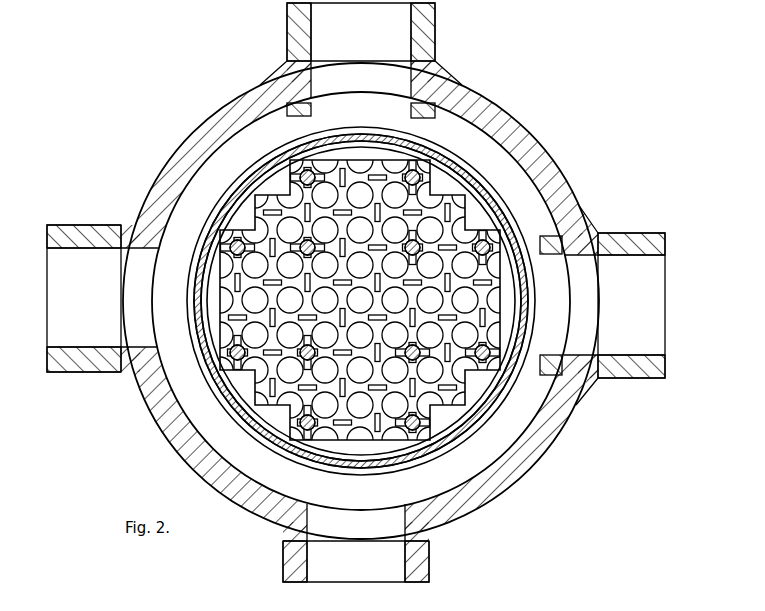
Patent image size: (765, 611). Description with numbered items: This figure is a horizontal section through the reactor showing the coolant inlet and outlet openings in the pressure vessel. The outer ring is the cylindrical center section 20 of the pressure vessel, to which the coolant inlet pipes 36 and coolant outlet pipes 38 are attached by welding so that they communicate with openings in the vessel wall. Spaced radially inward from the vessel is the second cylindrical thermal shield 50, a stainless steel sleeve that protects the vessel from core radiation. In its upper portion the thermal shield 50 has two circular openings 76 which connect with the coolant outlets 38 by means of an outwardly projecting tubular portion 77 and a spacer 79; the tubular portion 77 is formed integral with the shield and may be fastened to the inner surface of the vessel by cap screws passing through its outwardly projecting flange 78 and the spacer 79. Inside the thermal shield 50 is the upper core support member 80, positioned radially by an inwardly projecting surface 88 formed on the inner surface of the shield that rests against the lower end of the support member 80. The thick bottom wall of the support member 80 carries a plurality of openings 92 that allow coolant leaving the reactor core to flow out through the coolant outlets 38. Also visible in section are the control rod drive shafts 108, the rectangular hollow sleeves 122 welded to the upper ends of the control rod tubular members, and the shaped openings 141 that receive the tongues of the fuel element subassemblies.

The cylindrical center section 20 is at (529, 470).
The coolant inlet pipe 36 is at (74, 373).
The coolant outlet pipe 38 is at (436, 24).
The second cylindrical thermal shield 50 is at (401, 476).
The circular openings 76 is at (352, 134).
The outwardly projecting tubular portion 77 is at (302, 122).
The outwardly projecting flange 78 is at (424, 119).
The spacer 79 is at (442, 78).
The upper core support member 80 is at (451, 445).
The inwardly projecting surface 88 is at (503, 405).
The openings 92 is at (492, 283).
The drive shaft 108 is at (441, 146).
The hollow sleeve 122 is at (430, 172).
The opening 141 is at (468, 188).